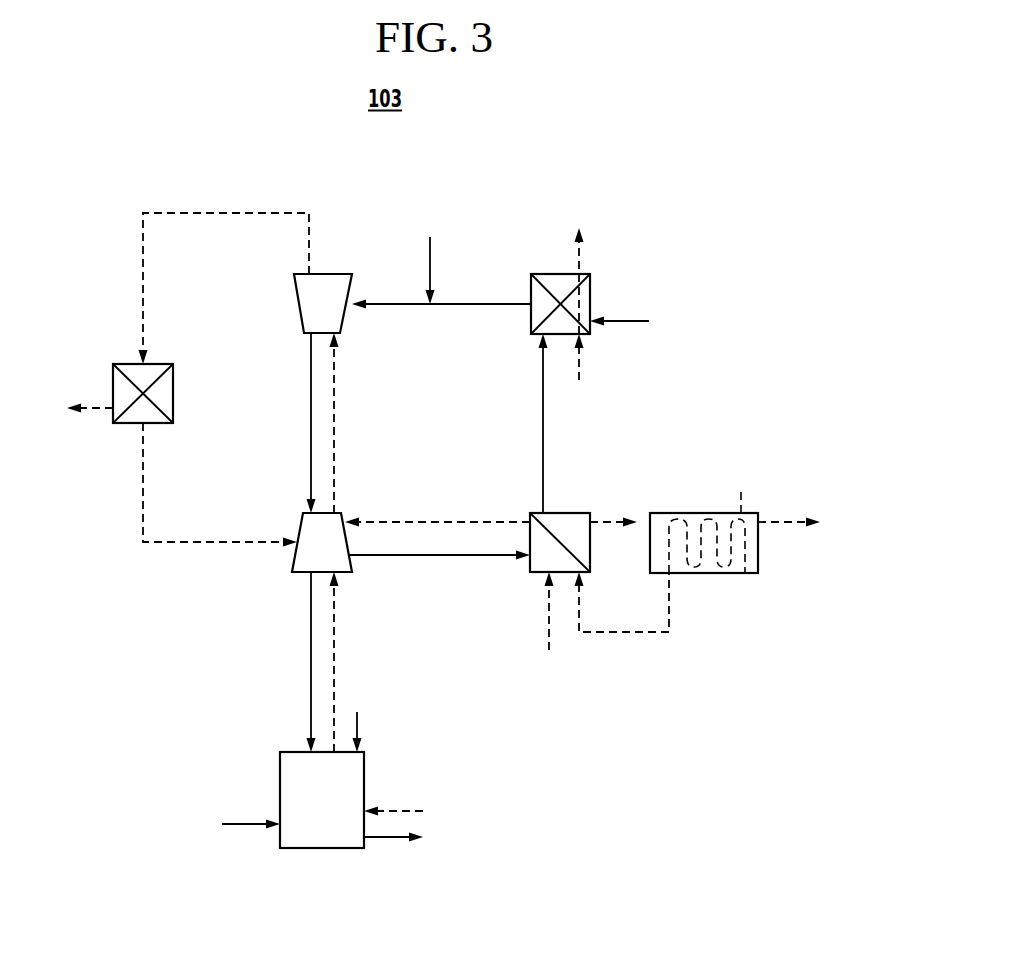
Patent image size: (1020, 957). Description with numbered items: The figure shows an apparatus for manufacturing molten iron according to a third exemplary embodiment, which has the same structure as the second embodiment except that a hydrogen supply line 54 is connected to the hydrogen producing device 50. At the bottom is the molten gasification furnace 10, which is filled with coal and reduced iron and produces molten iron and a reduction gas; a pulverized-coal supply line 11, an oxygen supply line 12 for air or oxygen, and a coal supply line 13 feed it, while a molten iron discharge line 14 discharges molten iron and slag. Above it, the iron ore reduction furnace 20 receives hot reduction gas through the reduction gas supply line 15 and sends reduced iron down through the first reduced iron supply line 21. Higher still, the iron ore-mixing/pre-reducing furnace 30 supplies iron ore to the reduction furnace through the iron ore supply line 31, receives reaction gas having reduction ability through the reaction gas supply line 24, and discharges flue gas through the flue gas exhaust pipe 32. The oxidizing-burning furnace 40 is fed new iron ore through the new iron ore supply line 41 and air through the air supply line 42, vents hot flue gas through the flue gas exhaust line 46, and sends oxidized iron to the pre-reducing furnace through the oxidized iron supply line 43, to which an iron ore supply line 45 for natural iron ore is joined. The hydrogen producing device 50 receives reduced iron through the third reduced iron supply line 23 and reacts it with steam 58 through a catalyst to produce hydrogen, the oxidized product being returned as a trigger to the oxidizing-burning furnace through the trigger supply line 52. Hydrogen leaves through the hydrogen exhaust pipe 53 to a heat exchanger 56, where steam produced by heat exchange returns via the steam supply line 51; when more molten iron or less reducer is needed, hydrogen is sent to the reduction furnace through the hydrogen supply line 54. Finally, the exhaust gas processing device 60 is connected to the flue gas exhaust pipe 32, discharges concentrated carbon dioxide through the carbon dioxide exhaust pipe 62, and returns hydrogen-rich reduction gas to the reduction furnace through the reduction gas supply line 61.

The molten gasification furnace 10 is at (280, 772).
The pulverized-coal supply line 11 is at (235, 829).
The oxygen supply line 12 is at (407, 810).
The coal supply line 13 is at (361, 722).
The molten iron discharge line 14 is at (388, 842).
The reduction gas supply line 15 is at (337, 682).
The iron ore reduction furnace 20 is at (300, 530).
The first reduced iron supply line 21 is at (311, 697).
The third reduced iron supply line 23 is at (485, 558).
The reaction gas supply line 24 is at (336, 430).
The iron ore-mixing/pre-reducing furnace 30 is at (298, 300).
The iron ore supply line 31 is at (311, 430).
The flue gas exhaust pipe 32 is at (226, 213).
The oxidizing-burning furnace 40 is at (590, 288).
The new iron ore supply line 41 is at (647, 325).
The air supply line 42 is at (584, 370).
The oxidized iron supply line 43 is at (500, 304).
The iron ore supply line 45 is at (428, 248).
The flue gas exhaust line 46 is at (575, 252).
The hydrogen producing device 50 is at (539, 574).
The steam supply line 51 is at (584, 600).
The trigger supply line 52 is at (543, 410).
The hydrogen exhaust pipe 53 is at (612, 526).
The hydrogen supply line 54 is at (485, 520).
The heat exchanger 56 is at (693, 513).
The steam 58 is at (549, 628).
The exhaust gas processing device 60 is at (113, 392).
The reduction gas supply line 61 is at (187, 541).
The carbon dioxide exhaust pipe 62 is at (95, 412).